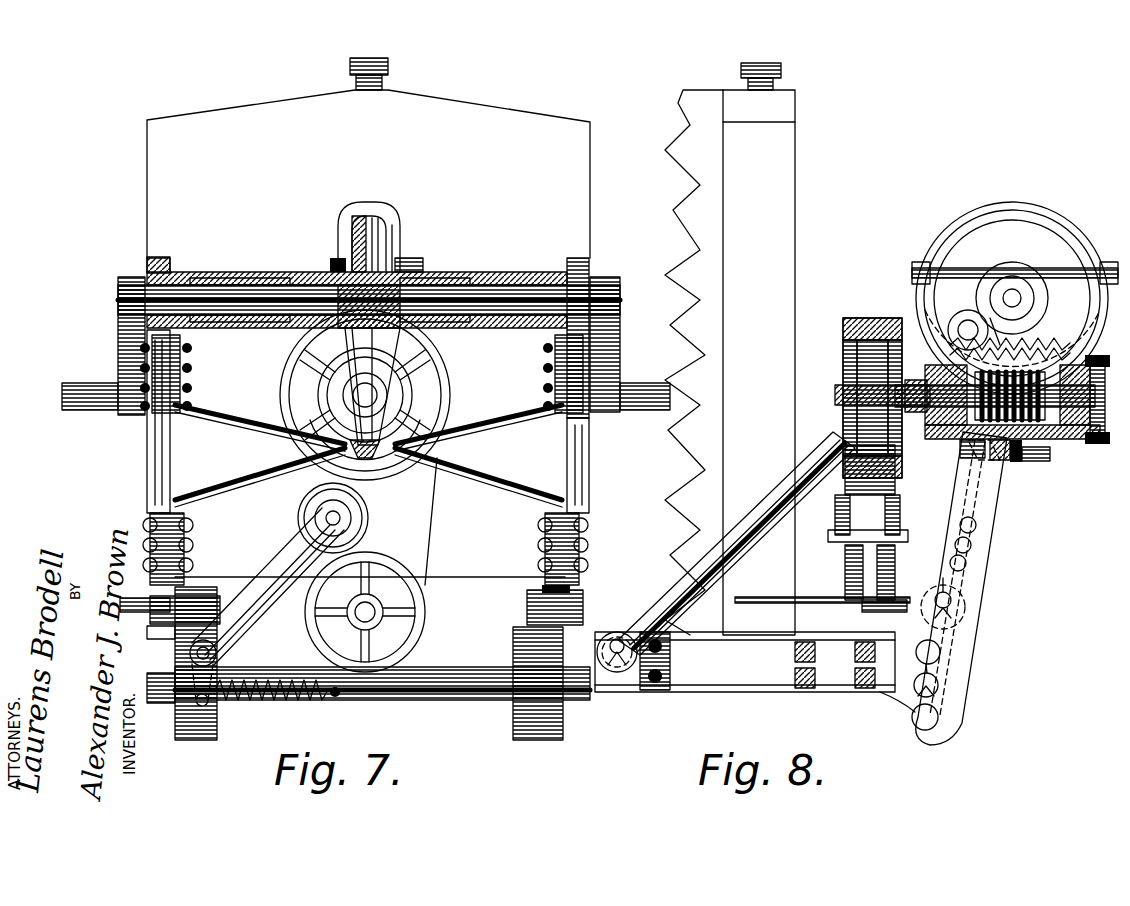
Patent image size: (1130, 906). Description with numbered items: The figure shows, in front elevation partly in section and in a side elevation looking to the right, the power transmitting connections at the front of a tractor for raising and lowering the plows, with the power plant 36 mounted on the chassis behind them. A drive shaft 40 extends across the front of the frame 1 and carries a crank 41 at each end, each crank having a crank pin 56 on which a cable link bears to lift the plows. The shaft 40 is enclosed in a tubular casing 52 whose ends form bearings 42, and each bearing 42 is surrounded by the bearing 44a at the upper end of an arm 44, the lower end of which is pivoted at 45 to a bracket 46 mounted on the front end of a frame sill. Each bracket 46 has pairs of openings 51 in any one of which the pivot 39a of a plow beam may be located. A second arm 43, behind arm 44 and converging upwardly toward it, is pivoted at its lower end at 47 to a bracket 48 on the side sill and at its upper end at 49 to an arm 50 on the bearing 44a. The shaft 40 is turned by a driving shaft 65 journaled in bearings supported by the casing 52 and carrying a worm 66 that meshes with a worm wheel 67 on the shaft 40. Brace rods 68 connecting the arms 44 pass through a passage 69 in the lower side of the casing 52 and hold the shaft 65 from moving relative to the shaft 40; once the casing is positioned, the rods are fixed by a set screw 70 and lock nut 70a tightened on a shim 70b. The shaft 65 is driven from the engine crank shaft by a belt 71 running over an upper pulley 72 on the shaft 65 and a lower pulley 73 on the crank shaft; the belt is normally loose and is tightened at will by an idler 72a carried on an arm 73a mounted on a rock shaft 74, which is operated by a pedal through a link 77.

In FIG. 8, the frame 1 is at (762, 682).
In FIG. 7, the power plant 36 is at (224, 109).
In FIG. 8, the power plant 36 is at (808, 128).
In FIG. 7, the pivot 39a is at (375, 683).
In FIG. 7, the drive shaft 40 is at (252, 290).
In FIG. 8, the drive shaft 40 is at (940, 246).
In FIG. 7, the crank 41 is at (125, 331).
In FIG. 8, the crank 41 is at (1035, 318).
In FIG. 7, the bearing 42 is at (147, 266).
In FIG. 8, the arm 43 is at (790, 503).
In FIG. 7, the arm 44 is at (160, 476).
In FIG. 8, the arm 44 is at (975, 500).
In FIG. 7, the bearing 44a is at (572, 262).
In FIG. 8, the bearing 44a is at (1030, 270).
In FIG. 7, the pivot 45 is at (150, 600).
In FIG. 8, the pivot 45 is at (955, 608).
In FIG. 7, the bracket 46 is at (214, 727).
In FIG. 8, the bracket 46 is at (950, 645).
In FIG. 8, the pivot 47 is at (612, 664).
In FIG. 8, the bracket 48 is at (660, 662).
In FIG. 8, the pivot 49 is at (945, 332).
In FIG. 8, the arm 50 is at (962, 310).
In FIG. 8, the openings 51 is at (935, 716).
In FIG. 7, the tubular casing 52 is at (230, 272).
In FIG. 8, the tubular casing 52 is at (940, 430).
In FIG. 7, the crank pin 56 is at (72, 405).
In FIG. 7, the shaft 65 is at (355, 385).
In FIG. 8, the shaft 65 is at (845, 395).
In FIG. 7, the worm 66 is at (350, 396).
In FIG. 8, the worm 66 is at (1042, 420).
In FIG. 7, the worm wheel 67 is at (355, 240).
In FIG. 8, the worm wheel 67 is at (1088, 366).
In FIG. 7, the brace rods 68 is at (240, 480).
In FIG. 8, the passage 69 is at (988, 466).
In FIG. 7, the set screw 70 is at (368, 460).
In FIG. 8, the set screw 70 is at (1028, 456).
In FIG. 8, the lock nut 70a is at (1010, 460).
In FIG. 8, the shim 70b is at (965, 450).
In FIG. 7, the belt 71 is at (430, 549).
In FIG. 8, the belt 71 is at (862, 478).
In FIG. 7, the pulley 72 is at (445, 394).
In FIG. 8, the pulley 72 is at (845, 342).
In FIG. 7, the idler 72a is at (297, 518).
In FIG. 8, the idler 72a is at (880, 505).
In FIG. 7, the pulley 73 is at (425, 613).
In FIG. 8, the pulley 73 is at (896, 572).
In FIG. 7, the arm 73a is at (278, 562).
In FIG. 8, the arm 73a is at (855, 570).
In FIG. 7, the rock shaft 74 is at (225, 654).
In FIG. 7, the link 77 is at (135, 603).
In FIG. 8, the link 77 is at (752, 603).